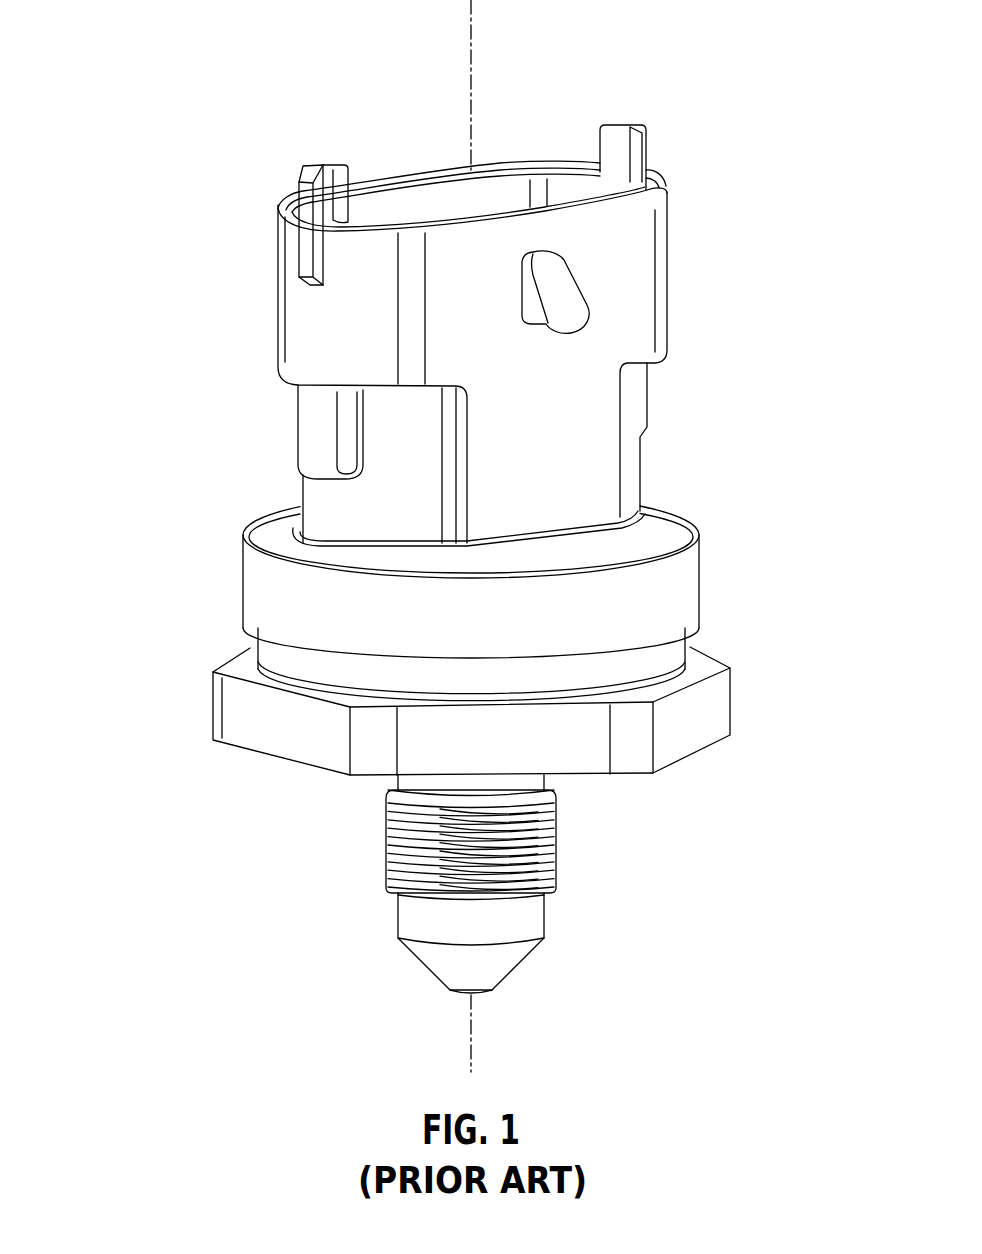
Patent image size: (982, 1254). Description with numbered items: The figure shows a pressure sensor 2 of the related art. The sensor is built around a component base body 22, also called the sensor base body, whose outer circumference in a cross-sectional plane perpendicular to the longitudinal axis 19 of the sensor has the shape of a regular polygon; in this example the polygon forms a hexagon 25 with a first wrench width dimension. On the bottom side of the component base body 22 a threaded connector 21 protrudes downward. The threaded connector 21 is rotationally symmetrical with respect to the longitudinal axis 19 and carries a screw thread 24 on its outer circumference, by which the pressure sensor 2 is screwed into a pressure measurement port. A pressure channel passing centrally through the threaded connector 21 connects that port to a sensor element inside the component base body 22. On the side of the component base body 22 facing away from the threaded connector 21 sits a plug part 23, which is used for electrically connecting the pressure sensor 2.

The pressure sensor 2 is at (186, 247).
The longitudinal axis 19 is at (471, 28).
The plug part 23 is at (634, 297).
The component base body 22 is at (717, 716).
The hexagon 25 is at (318, 742).
The screw thread 24 is at (540, 843).
The threaded connector 21 is at (566, 901).